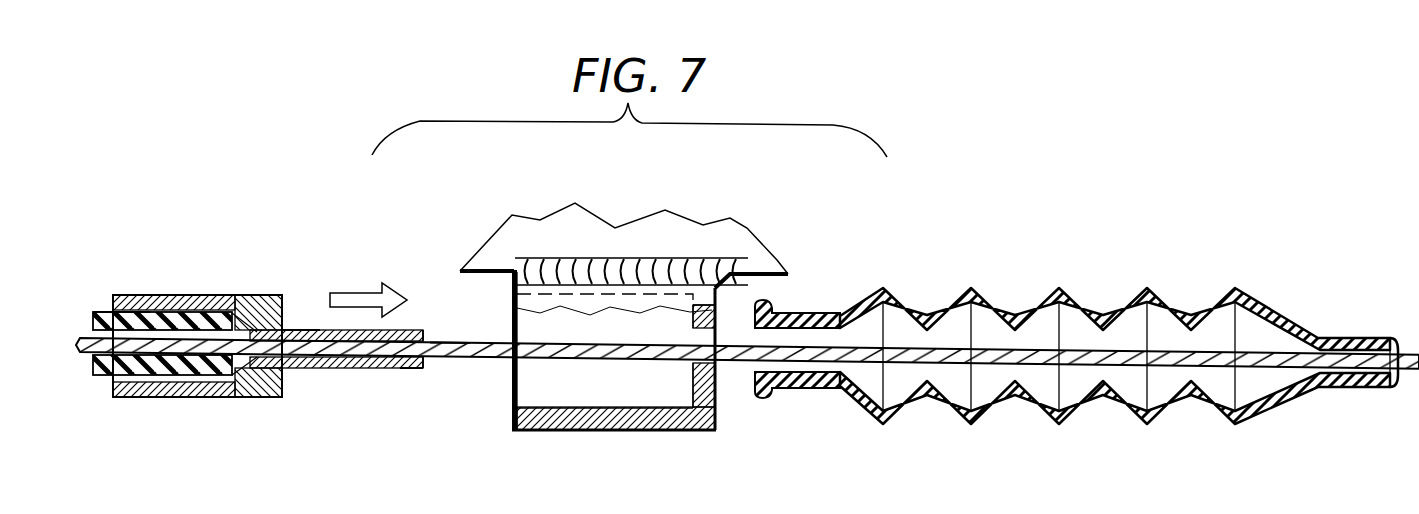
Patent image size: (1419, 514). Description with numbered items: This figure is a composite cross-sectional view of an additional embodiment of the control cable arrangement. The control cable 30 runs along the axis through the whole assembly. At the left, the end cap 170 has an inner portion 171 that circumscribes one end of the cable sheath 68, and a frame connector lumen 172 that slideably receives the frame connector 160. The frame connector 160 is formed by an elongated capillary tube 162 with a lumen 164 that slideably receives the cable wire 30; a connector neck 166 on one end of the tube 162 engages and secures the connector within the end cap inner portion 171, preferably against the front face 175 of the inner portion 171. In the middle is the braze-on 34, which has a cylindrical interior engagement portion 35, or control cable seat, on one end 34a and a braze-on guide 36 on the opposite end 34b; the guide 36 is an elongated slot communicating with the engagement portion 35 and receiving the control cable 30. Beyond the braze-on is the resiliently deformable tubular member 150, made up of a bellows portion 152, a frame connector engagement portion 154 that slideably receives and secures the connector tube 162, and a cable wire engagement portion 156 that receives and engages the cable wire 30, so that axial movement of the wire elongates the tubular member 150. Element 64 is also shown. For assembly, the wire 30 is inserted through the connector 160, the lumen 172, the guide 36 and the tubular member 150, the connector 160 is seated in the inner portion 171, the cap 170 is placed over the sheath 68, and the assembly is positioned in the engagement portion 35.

The control cable 30 is at (442, 343).
The braze-on 34 is at (602, 432).
The braze-on end 34a is at (517, 430).
The braze-on opposite end 34b is at (702, 432).
The engagement portion 35 is at (537, 405).
The braze-on guide 36 is at (700, 364).
The coil spring 64 is at (750, 243).
The cable sheath 68 is at (98, 378).
The tubular member 150 is at (963, 288).
The bellows portion 152 is at (1147, 290).
The frame connector engagement portion 154 is at (835, 289).
The cable wire engagement portion 156 is at (1373, 333).
The frame connector 160 is at (413, 370).
The capillary tube 162 is at (307, 370).
The lumen 164 is at (430, 358).
The connector neck 166 is at (257, 398).
The end cap 170 is at (180, 398).
The inner portion 171 is at (118, 312).
The frame connector lumen 172 is at (290, 328).
The front face 175 is at (248, 296).